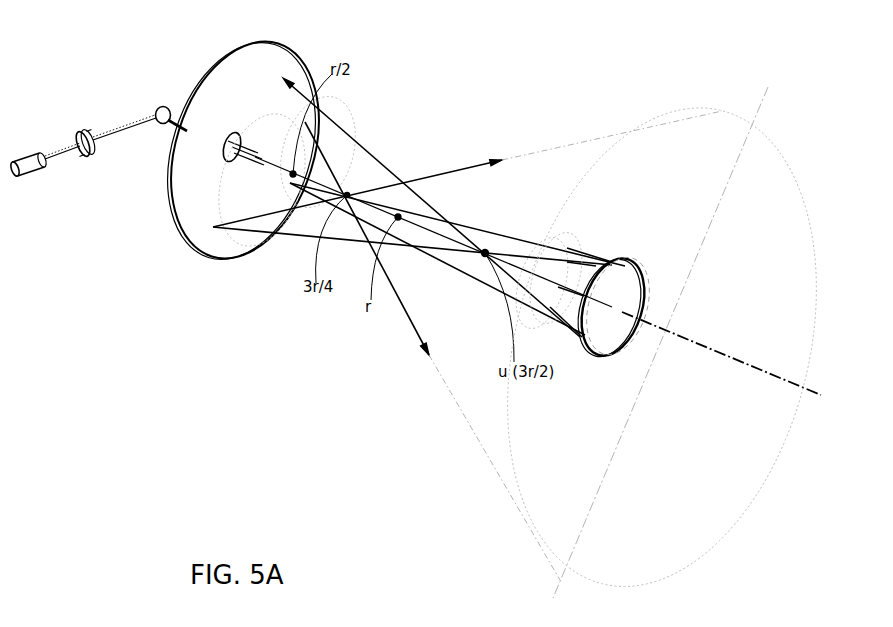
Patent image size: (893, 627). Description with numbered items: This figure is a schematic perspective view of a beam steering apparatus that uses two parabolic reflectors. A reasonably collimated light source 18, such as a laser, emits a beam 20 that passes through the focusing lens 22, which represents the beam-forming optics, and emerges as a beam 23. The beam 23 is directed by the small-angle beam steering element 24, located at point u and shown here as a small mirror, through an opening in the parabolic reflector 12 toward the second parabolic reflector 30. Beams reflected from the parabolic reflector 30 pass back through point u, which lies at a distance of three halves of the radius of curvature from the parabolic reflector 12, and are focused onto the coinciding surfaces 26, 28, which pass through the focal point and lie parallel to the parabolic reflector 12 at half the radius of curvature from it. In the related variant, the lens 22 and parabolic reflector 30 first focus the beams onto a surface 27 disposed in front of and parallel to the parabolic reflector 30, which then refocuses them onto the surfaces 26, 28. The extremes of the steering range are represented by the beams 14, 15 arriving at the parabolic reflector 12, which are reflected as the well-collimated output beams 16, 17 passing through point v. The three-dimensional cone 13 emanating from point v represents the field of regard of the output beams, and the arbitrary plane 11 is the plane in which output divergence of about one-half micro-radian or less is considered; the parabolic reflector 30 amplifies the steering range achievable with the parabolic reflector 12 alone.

The arbitrary plane 11 is at (763, 100).
The parabolic reflector 12 is at (263, 55).
The three-dimensional cone 13 is at (468, 428).
The beam 14 is at (372, 152).
The beam 15 is at (399, 221).
The beam 16 is at (419, 331).
The beam 17 is at (474, 166).
The light source 18 is at (38, 174).
The beam 20 is at (68, 154).
The focusing lens 22 is at (82, 134).
The beam 23 is at (127, 127).
The small-angle beam steering element 24 is at (160, 107).
The surface 26 is at (350, 113).
The surface 27 is at (577, 242).
The surface 28 is at (270, 254).
The parabolic reflector 30 is at (645, 287).